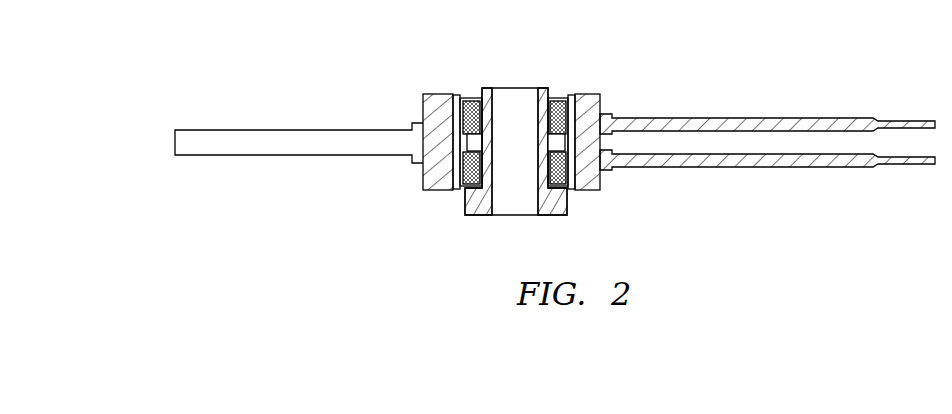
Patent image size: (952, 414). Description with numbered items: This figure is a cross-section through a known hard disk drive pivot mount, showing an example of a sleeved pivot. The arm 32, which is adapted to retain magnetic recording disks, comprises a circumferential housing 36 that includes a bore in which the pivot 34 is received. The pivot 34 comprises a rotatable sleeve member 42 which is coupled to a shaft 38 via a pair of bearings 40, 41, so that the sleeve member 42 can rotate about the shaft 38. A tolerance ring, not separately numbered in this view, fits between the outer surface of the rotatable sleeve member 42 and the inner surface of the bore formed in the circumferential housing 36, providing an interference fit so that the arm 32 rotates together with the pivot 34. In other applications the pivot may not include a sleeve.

The arm 32 is at (670, 118).
The pivot 34 is at (533, 144).
The circumferential housing 36 is at (588, 190).
The shaft 38 is at (558, 216).
The bearing 40 is at (463, 188).
The bearing 41 is at (477, 92).
The rotatable sleeve member 42 is at (457, 94).